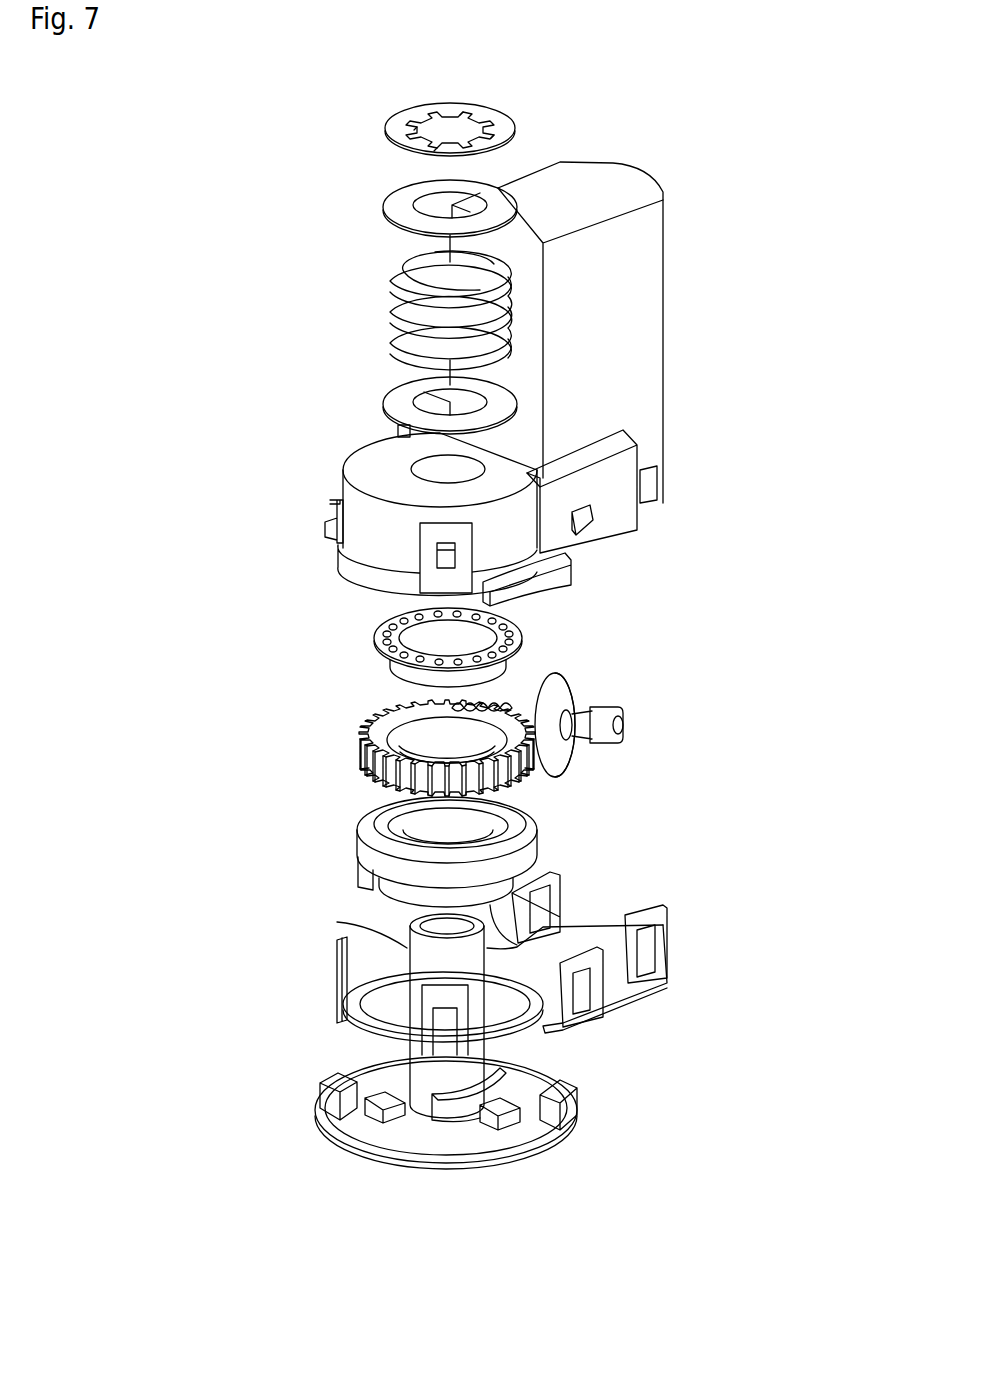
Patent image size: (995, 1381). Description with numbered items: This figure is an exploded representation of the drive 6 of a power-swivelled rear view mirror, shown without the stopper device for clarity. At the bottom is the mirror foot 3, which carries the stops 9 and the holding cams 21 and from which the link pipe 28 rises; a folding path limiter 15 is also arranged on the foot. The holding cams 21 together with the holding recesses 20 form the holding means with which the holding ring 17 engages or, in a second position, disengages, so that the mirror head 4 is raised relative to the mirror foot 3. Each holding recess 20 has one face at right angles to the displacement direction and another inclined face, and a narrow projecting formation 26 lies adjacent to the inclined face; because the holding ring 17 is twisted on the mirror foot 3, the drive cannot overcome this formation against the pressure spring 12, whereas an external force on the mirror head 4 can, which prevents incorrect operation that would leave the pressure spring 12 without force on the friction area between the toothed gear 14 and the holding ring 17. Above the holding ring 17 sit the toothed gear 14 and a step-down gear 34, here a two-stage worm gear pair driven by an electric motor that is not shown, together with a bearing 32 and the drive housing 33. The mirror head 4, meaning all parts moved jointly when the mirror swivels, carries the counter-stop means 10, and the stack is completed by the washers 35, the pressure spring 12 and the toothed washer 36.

The mirror foot 3 is at (483, 1142).
The mirror head 4 is at (618, 512).
The drive 6 is at (537, 601).
The stops 9 is at (340, 1082).
The counter-stop means 10 is at (327, 530).
The pressure spring 12 is at (403, 315).
The toothed gear 14 is at (383, 723).
The folding path limiter 15 is at (447, 1110).
The holding ring 17 is at (365, 858).
The holding recesses 20 is at (520, 890).
The holding cams 21 is at (368, 1088).
The projecting formation 26 is at (605, 927).
The link pipe 28 is at (423, 958).
The bearing 32 is at (387, 635).
The drive housing 33 is at (630, 282).
The step-down gear 34 is at (583, 708).
The washers 35 is at (403, 195).
The toothed washer 36 is at (397, 113).